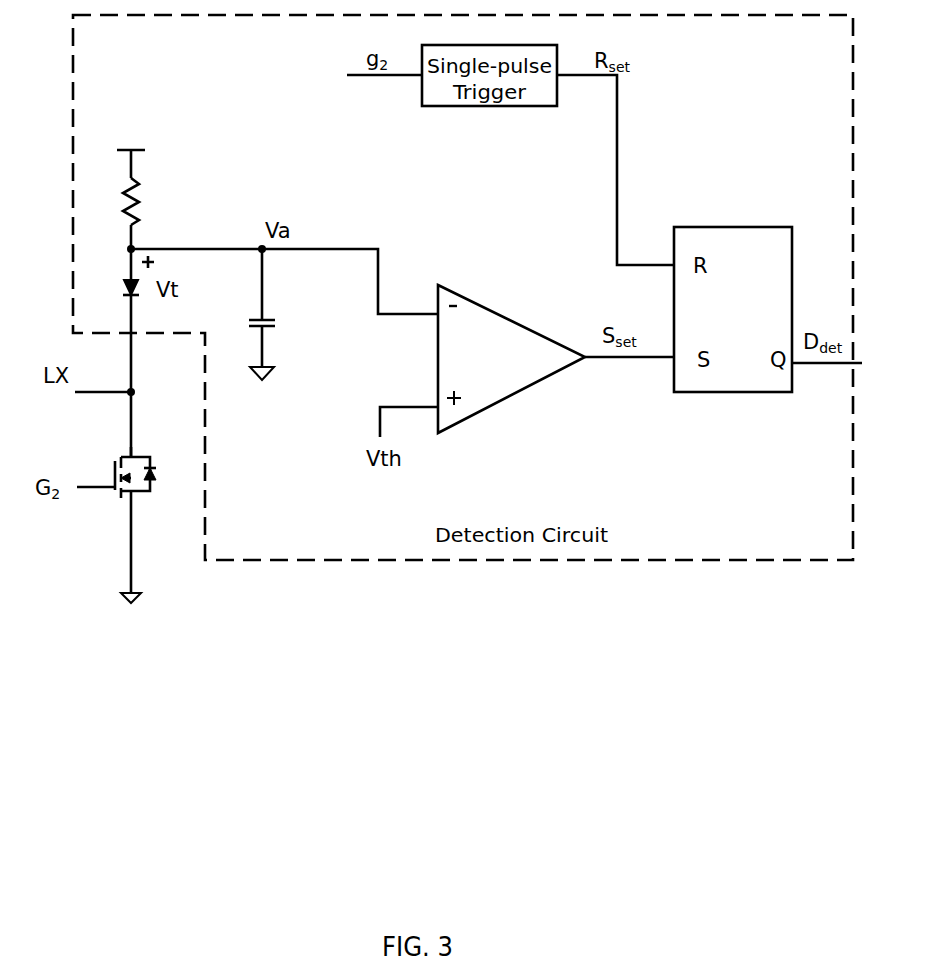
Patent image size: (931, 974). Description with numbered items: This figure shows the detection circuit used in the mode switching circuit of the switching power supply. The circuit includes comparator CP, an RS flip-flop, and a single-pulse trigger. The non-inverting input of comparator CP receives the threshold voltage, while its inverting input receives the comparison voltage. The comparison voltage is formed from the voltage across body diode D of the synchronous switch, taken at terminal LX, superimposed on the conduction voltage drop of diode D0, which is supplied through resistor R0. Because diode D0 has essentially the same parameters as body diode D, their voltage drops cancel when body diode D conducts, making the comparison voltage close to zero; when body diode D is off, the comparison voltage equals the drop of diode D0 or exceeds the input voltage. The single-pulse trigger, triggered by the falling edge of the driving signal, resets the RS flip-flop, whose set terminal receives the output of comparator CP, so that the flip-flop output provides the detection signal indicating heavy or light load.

The resistor R0 is at (108, 201).
The diode D0 is at (109, 290).
The body diode D is at (128, 520).
The comparator CP is at (511, 359).